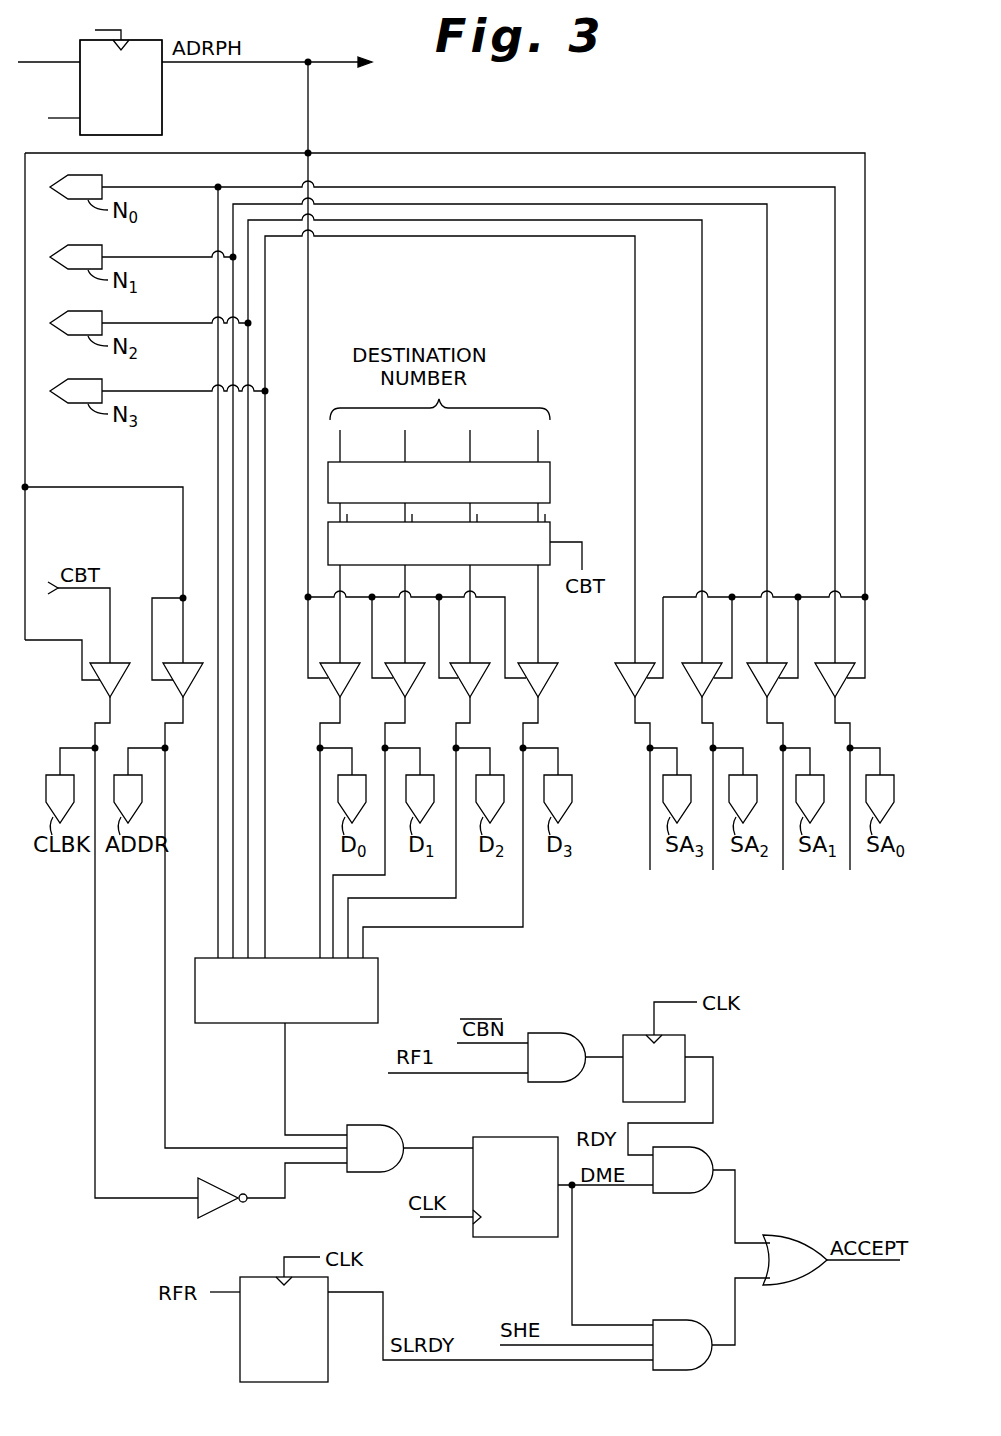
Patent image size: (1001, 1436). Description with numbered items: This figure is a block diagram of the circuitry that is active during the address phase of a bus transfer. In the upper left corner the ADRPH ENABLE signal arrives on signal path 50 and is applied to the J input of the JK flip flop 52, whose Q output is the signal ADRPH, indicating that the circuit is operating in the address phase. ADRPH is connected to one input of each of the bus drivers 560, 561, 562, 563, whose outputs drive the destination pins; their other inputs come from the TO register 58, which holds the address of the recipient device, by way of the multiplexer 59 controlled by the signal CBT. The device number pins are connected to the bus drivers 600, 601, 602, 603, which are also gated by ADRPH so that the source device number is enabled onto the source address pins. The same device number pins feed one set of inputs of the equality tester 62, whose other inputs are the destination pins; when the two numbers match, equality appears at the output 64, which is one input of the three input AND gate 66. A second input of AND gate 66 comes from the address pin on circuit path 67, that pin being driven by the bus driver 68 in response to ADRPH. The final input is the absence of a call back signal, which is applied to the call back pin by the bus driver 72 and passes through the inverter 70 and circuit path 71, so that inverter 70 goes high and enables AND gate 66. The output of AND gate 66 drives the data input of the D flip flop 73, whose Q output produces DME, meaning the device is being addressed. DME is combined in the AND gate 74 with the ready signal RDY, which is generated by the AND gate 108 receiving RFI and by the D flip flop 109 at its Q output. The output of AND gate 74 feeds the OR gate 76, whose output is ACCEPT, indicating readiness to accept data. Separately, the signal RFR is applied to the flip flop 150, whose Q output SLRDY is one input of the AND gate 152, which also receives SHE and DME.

The signal path 50 is at (60, 64).
The JK flip flop 52 is at (162, 118).
The TO register 58 is at (550, 487).
The multiplexer 59 is at (550, 533).
The bus driver 560 is at (332, 681).
The bus driver 561 is at (398, 681).
The bus driver 562 is at (464, 681).
The bus driver 563 is at (532, 681).
The bus driver 600 is at (624, 676).
The bus driver 601 is at (692, 676).
The bus driver 602 is at (757, 676).
The bus driver 603 is at (824, 676).
The bus driver 72 is at (97, 689).
The bus driver 68 is at (170, 689).
The equality tester 62 is at (378, 972).
The output 64 is at (285, 1075).
The circuit path 67 is at (165, 1078).
The three input AND gate 66 is at (364, 1125).
The inverter 70 is at (213, 1212).
The circuit path 71 is at (287, 1192).
The D flip flop 73 is at (510, 1137).
The AND gate 108 is at (574, 1018).
The D flip flop 109 is at (623, 1097).
The AND gate 74 is at (678, 1193).
The OR gate 76 is at (783, 1235).
The AND gate 152 is at (668, 1320).
The flip flop 150 is at (240, 1335).